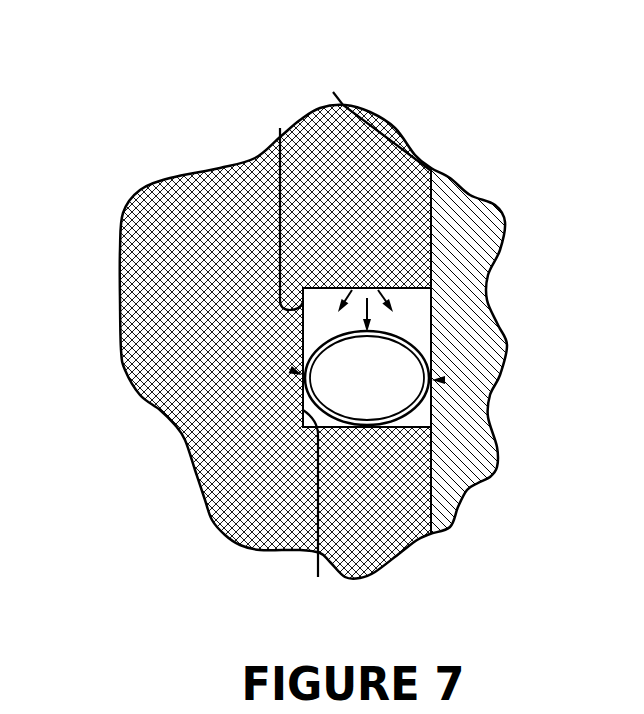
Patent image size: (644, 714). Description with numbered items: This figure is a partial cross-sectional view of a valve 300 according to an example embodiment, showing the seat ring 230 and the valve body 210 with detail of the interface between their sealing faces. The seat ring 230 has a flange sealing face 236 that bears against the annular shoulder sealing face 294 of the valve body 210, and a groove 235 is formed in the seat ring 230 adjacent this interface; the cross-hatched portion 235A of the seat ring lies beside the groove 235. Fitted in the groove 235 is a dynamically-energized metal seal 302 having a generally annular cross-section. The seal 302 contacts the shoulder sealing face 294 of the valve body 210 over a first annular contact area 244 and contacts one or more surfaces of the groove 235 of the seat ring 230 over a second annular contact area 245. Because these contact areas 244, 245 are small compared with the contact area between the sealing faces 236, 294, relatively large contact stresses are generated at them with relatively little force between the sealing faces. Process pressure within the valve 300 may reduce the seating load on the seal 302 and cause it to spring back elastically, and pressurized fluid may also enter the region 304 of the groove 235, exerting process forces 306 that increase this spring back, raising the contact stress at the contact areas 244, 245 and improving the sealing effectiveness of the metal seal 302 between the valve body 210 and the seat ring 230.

The valve 300 is at (131, 128).
The shoulder sealing face 294 is at (333, 92).
The first body portion 235A is at (280, 128).
The flange sealing face 236 is at (431, 190).
The valve body 210 is at (485, 245).
The region 304 is at (424, 320).
The dynamically-energized metal seal 302 is at (413, 351).
The process forces 306 is at (365, 311).
The second annular contact area 245 is at (292, 371).
The seat ring 230 is at (230, 505).
The groove 235 is at (318, 577).
The first annular contact area 244 is at (443, 380).